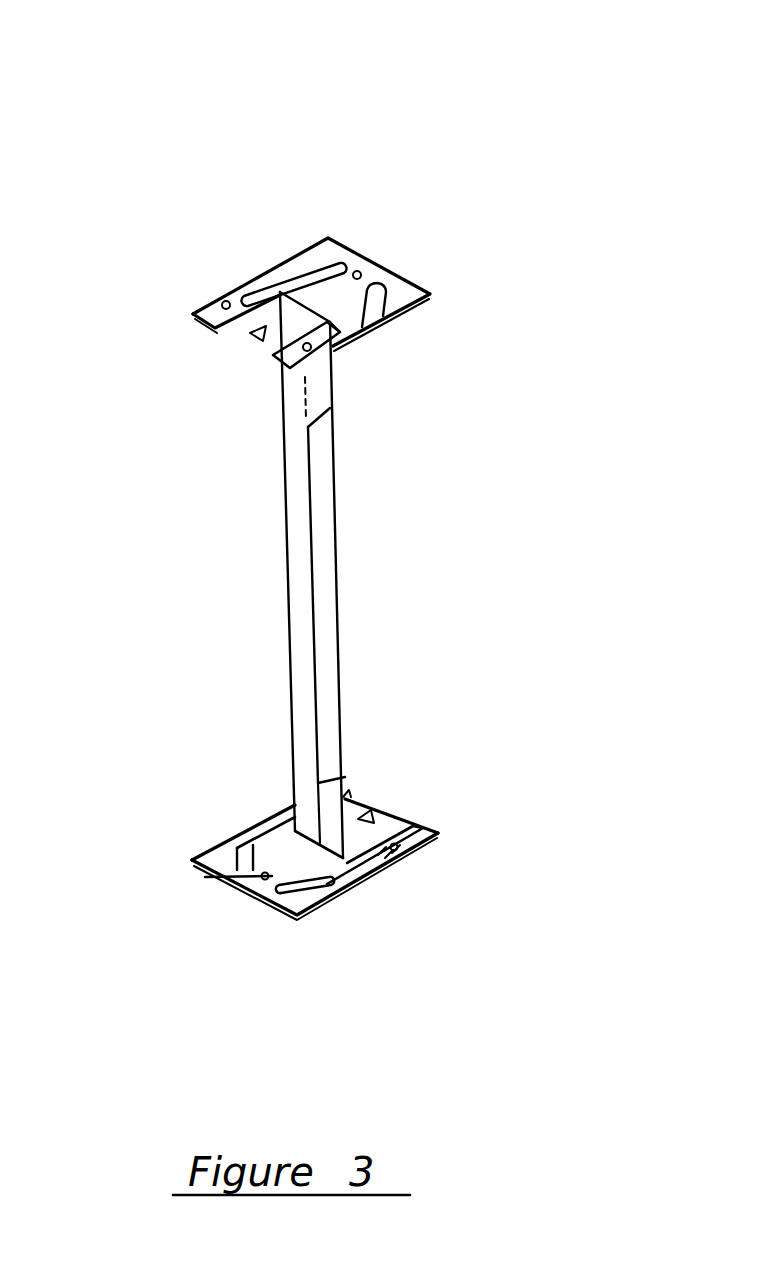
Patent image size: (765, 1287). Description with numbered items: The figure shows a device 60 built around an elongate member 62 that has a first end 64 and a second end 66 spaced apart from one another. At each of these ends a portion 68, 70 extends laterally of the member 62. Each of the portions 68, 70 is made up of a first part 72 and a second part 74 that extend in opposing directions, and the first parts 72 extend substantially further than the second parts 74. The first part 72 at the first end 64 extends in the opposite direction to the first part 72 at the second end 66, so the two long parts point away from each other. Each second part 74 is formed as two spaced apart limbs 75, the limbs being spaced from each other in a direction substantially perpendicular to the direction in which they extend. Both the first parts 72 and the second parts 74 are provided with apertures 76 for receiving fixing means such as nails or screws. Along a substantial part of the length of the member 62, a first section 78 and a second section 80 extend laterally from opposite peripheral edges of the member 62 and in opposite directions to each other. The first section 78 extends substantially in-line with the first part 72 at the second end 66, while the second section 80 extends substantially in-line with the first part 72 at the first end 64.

The device 60 is at (543, 185).
The member 62 is at (290, 635).
The first end 64 is at (280, 251).
The second end 66 is at (320, 904).
The portion 68 is at (363, 327).
The portion 70 is at (238, 832).
The first part 72 is at (402, 292).
The second part 74 is at (250, 335).
The limb 75 is at (207, 300).
The aperture 76 is at (226, 292).
The first section 78 is at (323, 660).
The second section 80 is at (330, 405).